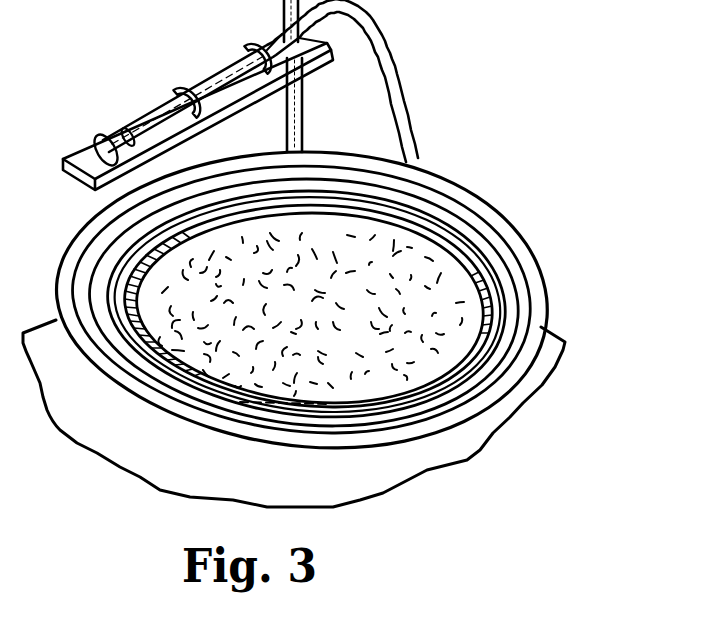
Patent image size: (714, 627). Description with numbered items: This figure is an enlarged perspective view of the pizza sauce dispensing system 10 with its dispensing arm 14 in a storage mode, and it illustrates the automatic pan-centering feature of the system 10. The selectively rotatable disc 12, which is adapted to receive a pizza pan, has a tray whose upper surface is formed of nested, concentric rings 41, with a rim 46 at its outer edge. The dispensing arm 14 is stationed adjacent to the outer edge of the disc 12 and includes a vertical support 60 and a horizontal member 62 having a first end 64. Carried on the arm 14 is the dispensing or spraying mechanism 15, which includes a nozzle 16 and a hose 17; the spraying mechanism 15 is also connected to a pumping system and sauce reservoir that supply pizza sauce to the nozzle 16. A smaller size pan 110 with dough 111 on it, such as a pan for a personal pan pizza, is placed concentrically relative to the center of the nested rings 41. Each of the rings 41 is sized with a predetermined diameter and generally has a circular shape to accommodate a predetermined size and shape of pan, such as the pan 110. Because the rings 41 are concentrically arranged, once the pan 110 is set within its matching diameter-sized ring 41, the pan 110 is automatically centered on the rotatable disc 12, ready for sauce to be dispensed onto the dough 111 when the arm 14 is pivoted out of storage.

The pizza sauce dispensing system 10 is at (524, 128).
The rotatable disc 12 is at (510, 205).
The dispensing arm 14 is at (78, 140).
The spraying mechanism 15 is at (137, 100).
The nozzle 16 is at (78, 173).
The hose 17 is at (216, 68).
The nested concentric rings 41 is at (444, 200).
The rim 46 is at (532, 258).
The vertical support 60 is at (288, 109).
The horizontal member 62 is at (217, 113).
The first end 64 is at (88, 188).
The pan 110 is at (490, 295).
The dough 111 is at (410, 348).